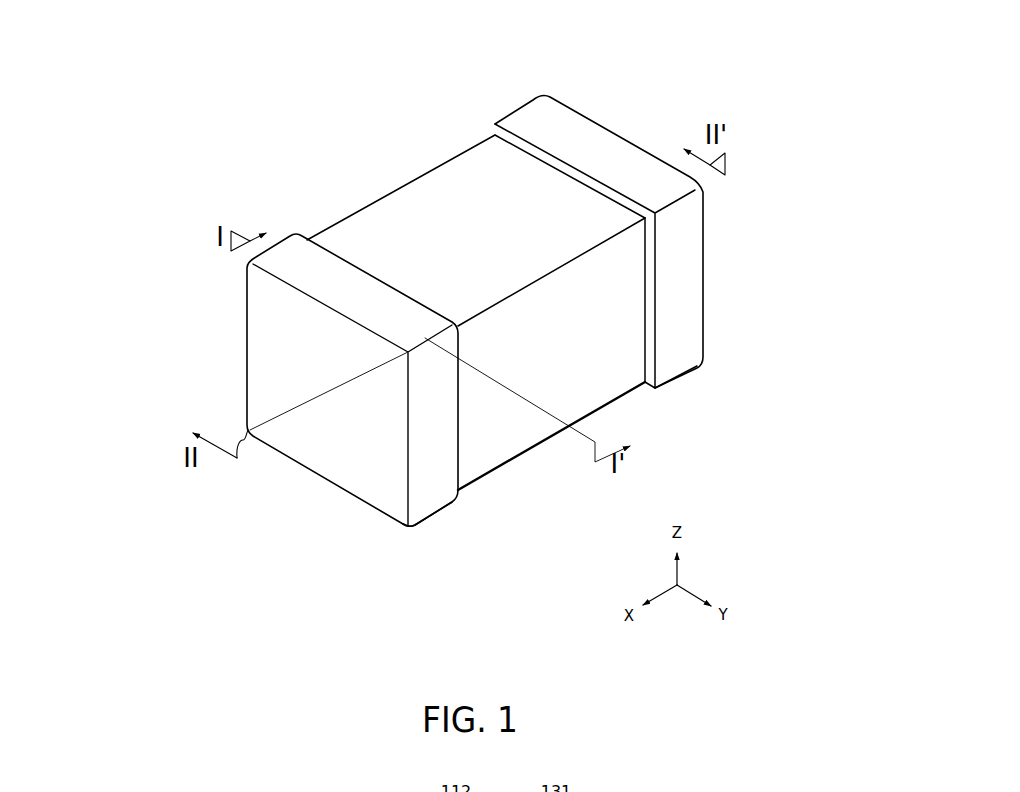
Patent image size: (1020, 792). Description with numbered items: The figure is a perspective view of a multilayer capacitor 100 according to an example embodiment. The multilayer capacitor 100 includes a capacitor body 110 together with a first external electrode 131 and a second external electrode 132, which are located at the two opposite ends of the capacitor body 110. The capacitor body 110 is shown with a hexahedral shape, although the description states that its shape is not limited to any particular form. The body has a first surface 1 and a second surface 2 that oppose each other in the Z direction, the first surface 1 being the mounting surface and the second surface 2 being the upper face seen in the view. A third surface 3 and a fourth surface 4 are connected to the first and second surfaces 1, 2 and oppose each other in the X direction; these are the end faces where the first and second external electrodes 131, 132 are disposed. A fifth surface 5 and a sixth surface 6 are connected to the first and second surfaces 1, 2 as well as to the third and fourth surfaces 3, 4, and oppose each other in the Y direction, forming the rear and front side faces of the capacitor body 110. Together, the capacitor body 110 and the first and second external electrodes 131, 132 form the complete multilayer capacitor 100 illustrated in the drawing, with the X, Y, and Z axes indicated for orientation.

The multilayer capacitor 100 is at (345, 31).
The capacitor body 110 is at (404, 241).
The first surface 1 is at (508, 465).
The second surface 2 is at (451, 205).
The third surface 3 is at (325, 456).
The fourth surface 4 is at (608, 121).
The fifth surface 5 is at (332, 225).
The sixth surface 6 is at (613, 373).
The first external electrode 131 is at (437, 512).
The second external electrode 132 is at (685, 362).